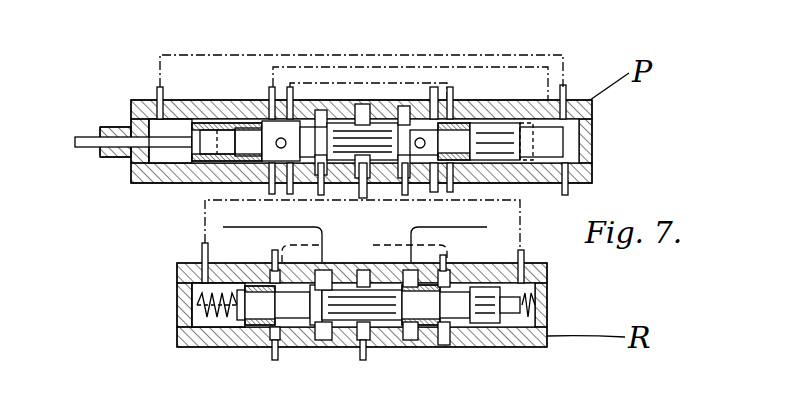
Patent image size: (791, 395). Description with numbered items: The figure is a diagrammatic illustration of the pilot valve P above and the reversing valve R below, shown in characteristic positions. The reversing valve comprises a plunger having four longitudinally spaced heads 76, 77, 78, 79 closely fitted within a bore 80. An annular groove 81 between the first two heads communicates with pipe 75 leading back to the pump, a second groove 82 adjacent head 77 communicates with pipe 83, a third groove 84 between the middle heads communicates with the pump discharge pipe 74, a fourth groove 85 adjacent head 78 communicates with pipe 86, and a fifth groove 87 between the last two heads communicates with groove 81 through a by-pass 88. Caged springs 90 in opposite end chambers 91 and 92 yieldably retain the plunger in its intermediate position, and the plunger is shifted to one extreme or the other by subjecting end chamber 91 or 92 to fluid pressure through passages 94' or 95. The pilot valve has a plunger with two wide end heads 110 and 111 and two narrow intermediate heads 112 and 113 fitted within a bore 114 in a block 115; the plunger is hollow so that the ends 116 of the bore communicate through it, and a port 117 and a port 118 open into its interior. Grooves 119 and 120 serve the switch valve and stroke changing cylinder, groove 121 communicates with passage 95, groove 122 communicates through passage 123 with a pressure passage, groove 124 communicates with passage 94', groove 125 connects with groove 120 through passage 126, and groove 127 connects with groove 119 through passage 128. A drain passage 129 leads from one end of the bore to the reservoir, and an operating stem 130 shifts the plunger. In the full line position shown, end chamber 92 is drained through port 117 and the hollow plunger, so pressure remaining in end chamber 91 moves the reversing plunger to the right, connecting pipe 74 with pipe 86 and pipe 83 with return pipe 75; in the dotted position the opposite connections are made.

The pump discharge pipe 74 is at (366, 356).
The pipe 75 is at (270, 352).
The head 76 is at (242, 348).
The head 77 is at (348, 310).
The head 78 is at (437, 308).
The head 79 is at (500, 337).
The bore 80 is at (375, 290).
The annular groove 81 is at (272, 268).
The second groove 82 is at (326, 282).
The pipe 83 is at (248, 227).
The third groove 84 is at (364, 328).
The fourth groove 85 is at (413, 335).
The pipe 86 is at (462, 227).
The fifth groove 87 is at (450, 272).
The by-pass 88 is at (367, 245).
The caged springs 90 is at (208, 318).
The end chamber 91 is at (192, 297).
The end chamber 92 is at (542, 288).
The passage 94' is at (337, 241).
The passage 95 is at (523, 256).
The end head 110 is at (472, 127).
The end head 111 is at (244, 130).
The intermediate head 112 is at (394, 110).
The intermediate head 113 is at (304, 112).
The bore 114 is at (368, 197).
The block 115 is at (180, 176).
The ends of the bore 116 is at (175, 118).
The port 117 is at (431, 100).
The port 118 is at (284, 99).
The annular groove 119 is at (455, 113).
The groove 120 is at (438, 108).
The groove 121 is at (450, 190).
The groove 122 is at (357, 105).
The passage 123 is at (406, 198).
The groove 124 is at (323, 186).
The groove 125 is at (297, 190).
The passage 126 is at (357, 82).
The groove 127 is at (270, 96).
The passage 128 is at (335, 66).
The drain passage 129 is at (567, 186).
The operating stem 130 is at (90, 150).